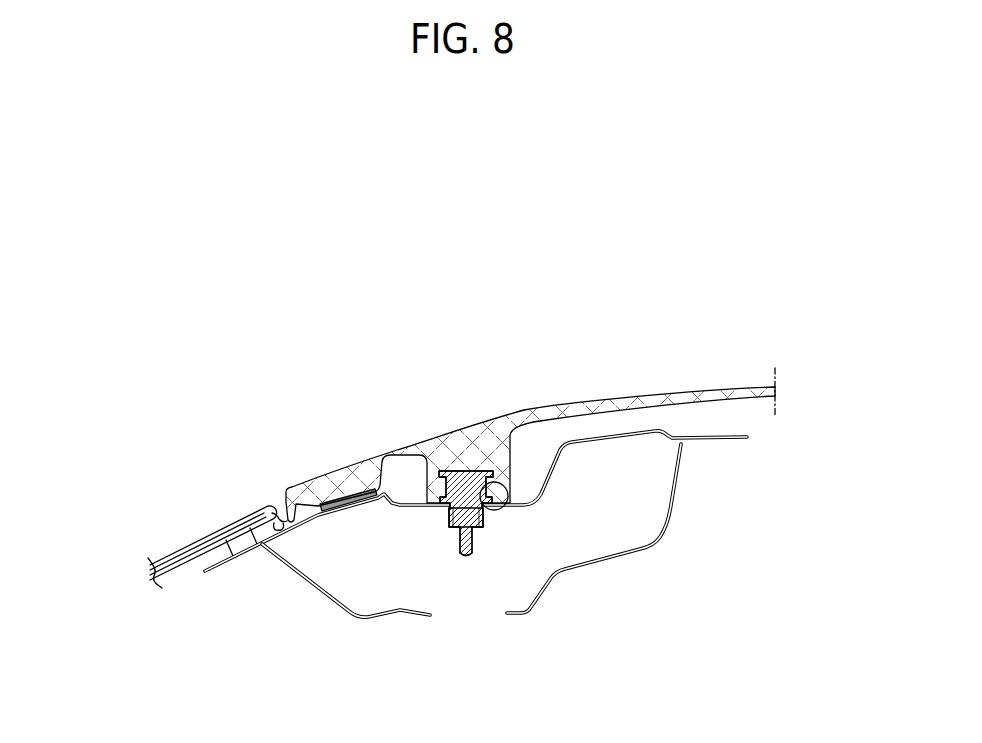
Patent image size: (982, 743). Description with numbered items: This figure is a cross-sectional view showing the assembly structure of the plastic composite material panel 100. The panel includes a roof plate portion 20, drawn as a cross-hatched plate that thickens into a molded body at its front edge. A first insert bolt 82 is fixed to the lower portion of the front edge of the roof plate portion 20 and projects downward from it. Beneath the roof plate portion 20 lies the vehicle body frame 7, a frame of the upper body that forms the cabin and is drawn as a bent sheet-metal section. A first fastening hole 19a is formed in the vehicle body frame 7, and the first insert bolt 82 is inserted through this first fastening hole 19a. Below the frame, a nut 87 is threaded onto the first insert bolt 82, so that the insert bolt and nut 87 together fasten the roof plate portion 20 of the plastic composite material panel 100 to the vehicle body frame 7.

The plastic composite material panel 100 is at (453, 266).
The roof plate portion 20 is at (526, 398).
The first insert bolt 82 is at (462, 486).
The nut 87 is at (449, 526).
The first fastening hole 19a is at (504, 486).
The vehicle body frame 7 is at (694, 513).